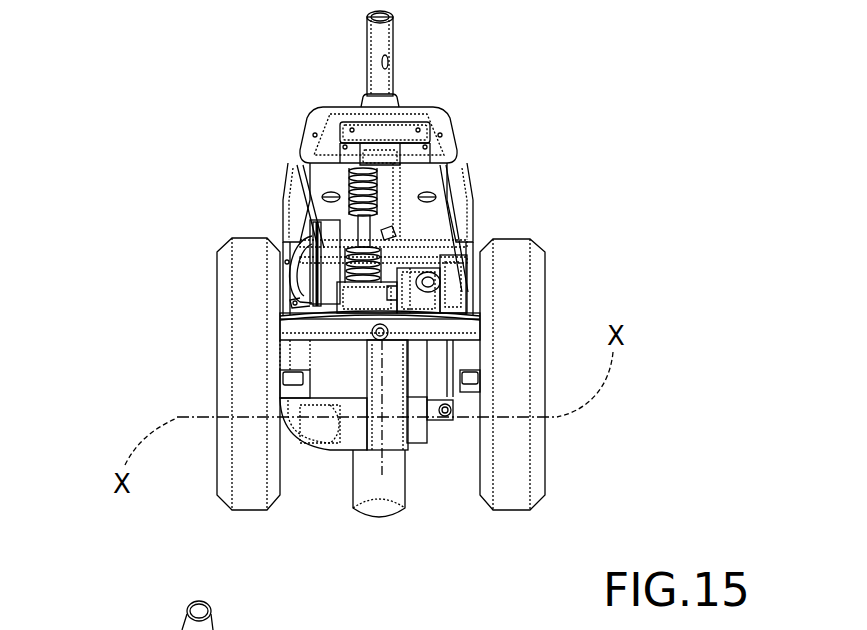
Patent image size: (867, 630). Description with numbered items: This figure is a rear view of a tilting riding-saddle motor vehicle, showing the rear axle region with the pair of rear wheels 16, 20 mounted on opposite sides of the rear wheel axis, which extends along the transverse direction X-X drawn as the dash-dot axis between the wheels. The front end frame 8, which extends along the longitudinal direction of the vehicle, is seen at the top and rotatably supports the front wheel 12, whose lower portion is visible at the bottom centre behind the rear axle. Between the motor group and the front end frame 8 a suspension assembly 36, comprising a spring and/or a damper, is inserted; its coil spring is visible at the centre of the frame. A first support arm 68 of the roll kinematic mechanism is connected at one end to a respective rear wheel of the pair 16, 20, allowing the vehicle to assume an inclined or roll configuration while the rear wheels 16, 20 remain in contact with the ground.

The front end frame 8 is at (437, 117).
The front wheel 12 is at (383, 505).
The rear wheel 16 is at (247, 285).
The rear wheel 20 is at (520, 282).
The suspension assembly 36 is at (342, 212).
The first support arm 68 is at (467, 253).